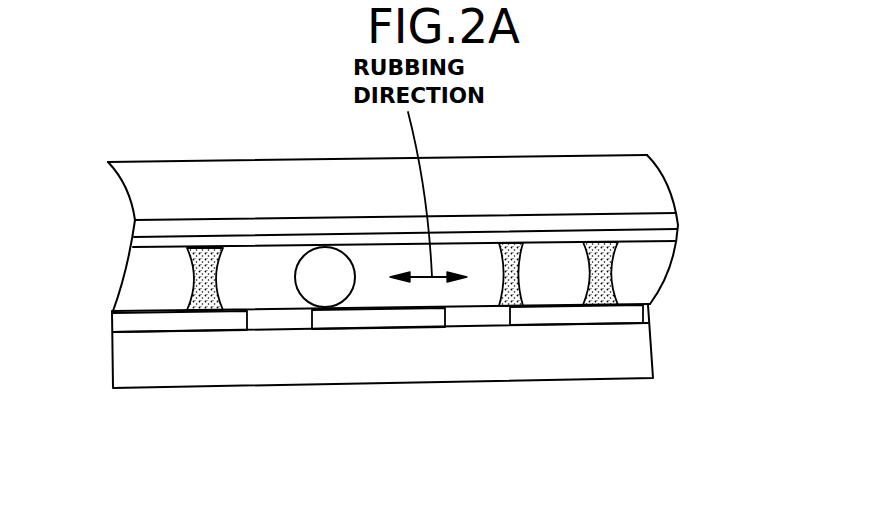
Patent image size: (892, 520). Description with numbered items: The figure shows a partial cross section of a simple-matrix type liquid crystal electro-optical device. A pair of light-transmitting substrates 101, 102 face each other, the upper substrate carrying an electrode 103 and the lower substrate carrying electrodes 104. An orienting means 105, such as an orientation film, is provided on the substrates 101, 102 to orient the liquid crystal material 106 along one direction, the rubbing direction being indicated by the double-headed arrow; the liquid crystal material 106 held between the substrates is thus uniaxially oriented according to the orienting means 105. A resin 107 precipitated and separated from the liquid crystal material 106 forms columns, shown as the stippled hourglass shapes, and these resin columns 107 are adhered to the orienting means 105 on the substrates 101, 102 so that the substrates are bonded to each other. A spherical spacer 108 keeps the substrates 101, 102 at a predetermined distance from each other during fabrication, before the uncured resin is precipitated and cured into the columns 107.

The light-transmitting substrate 101 is at (553, 178).
The light-transmitting substrate 102 is at (572, 363).
The electrode 103 is at (613, 223).
The electrode 104 is at (593, 318).
The orienting means 105 is at (642, 228).
The liquid crystal material 106 is at (650, 255).
The resin columns 107 is at (612, 292).
The spacers 108 is at (325, 300).